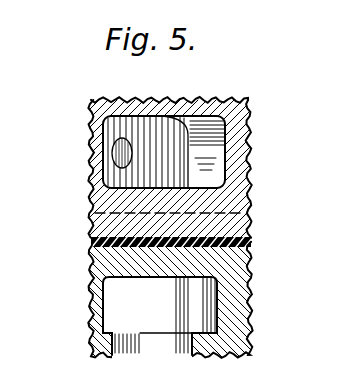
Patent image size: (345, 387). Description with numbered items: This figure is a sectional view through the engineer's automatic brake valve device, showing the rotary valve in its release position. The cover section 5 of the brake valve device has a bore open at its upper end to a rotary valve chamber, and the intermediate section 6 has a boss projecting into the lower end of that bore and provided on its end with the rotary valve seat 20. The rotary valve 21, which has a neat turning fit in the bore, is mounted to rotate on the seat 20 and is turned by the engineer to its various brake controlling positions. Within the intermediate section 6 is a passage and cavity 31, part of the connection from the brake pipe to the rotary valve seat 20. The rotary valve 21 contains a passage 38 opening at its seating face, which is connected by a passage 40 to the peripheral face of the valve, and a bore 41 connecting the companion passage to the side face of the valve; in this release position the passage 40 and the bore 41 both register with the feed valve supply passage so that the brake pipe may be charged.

The cover section 5 is at (93, 177).
The intermediate section 6 is at (93, 266).
The rotary valve seat 20 is at (242, 211).
The rotary valve 21 is at (142, 136).
The passage and cavity 31 is at (173, 343).
The passage 38 is at (214, 167).
The passage 40 is at (226, 145).
The bore 41 is at (111, 152).